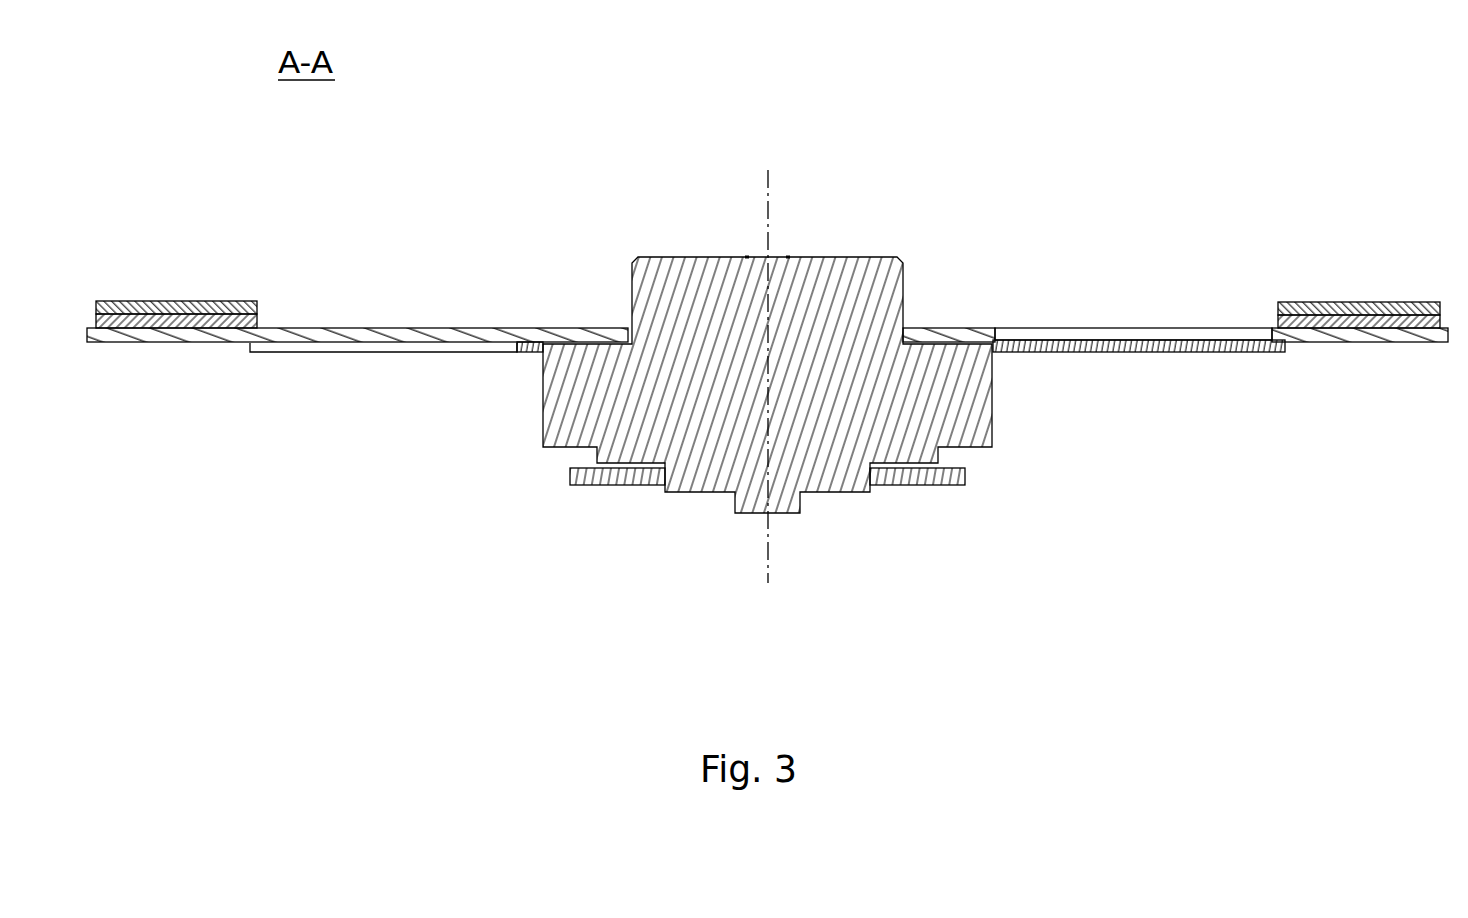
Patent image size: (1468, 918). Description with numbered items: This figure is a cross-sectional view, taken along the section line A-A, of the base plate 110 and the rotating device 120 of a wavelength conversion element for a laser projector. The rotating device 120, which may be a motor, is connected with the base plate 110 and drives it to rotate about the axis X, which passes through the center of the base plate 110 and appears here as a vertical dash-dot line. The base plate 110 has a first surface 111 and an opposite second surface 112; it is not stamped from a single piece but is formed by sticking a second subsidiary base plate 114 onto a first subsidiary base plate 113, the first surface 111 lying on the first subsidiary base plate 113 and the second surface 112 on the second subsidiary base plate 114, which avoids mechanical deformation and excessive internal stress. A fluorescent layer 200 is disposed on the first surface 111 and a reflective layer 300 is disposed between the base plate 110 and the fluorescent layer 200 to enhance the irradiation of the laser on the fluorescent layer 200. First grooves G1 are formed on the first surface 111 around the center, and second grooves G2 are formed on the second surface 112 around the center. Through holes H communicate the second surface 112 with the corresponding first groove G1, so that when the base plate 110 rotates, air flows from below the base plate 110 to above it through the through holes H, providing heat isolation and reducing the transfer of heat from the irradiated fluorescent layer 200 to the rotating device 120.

The base plate 110 is at (767, 367).
The first surface 111 is at (767, 346).
The second surface 112 is at (901, 415).
The first subsidiary base plate 113 is at (1300, 344).
The second subsidiary base plate 114 is at (1242, 352).
The rotating device 120 is at (870, 275).
The fluorescent layer 200 is at (1362, 310).
The reflective layer 300 is at (1300, 316).
The first grooves G1 is at (1094, 325).
The second grooves G2 is at (388, 356).
The through holes H is at (1031, 364).
The axis X is at (768, 184).